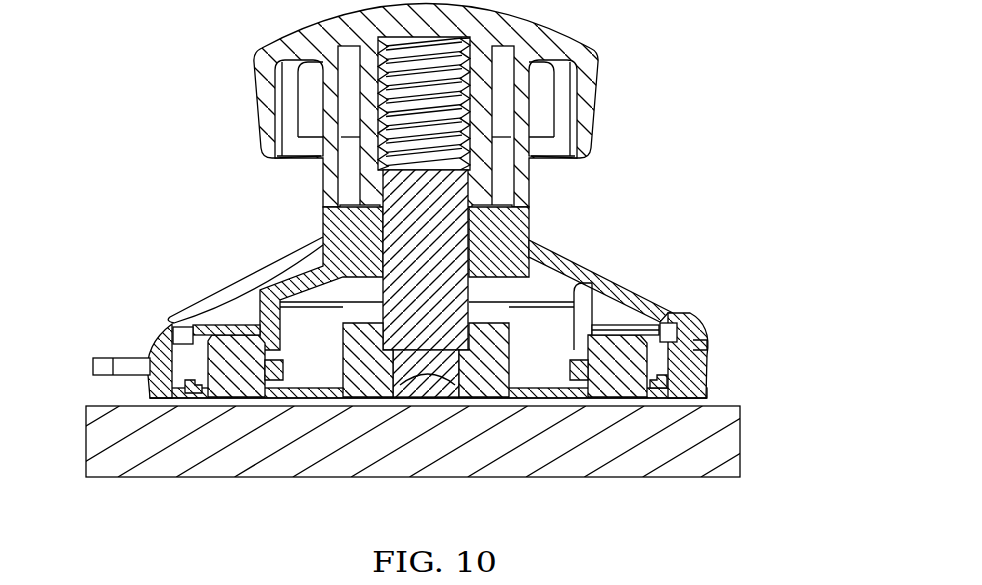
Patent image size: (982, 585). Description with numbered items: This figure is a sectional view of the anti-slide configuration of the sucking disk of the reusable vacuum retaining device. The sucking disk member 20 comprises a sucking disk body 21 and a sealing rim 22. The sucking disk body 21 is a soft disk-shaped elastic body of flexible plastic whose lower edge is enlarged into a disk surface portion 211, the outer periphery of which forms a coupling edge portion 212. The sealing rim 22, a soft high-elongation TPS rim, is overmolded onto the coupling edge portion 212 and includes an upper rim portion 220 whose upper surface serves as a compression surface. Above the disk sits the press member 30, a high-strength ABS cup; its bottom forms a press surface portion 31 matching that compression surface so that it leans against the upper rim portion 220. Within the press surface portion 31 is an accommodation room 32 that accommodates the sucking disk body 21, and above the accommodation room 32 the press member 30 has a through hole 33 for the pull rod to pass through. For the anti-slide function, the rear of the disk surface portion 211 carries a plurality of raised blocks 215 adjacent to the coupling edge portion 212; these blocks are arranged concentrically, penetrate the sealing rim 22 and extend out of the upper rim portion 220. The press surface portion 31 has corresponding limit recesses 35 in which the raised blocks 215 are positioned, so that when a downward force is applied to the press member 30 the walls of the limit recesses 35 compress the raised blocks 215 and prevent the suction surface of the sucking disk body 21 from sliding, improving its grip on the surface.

The sucking disk member 20 is at (547, 343).
The sucking disk body 21 is at (600, 330).
The disk surface portion 211 is at (582, 388).
The coupling edge portion 212 is at (188, 388).
The raised blocks 215 is at (170, 345).
The sealing rim 22 is at (710, 390).
The upper rim portion 220 is at (697, 347).
The press member 30 is at (173, 305).
The press surface portion 31 is at (150, 385).
The accommodation room 32 is at (295, 375).
The through hole 33 is at (383, 245).
The limit recesses 35 is at (227, 337).